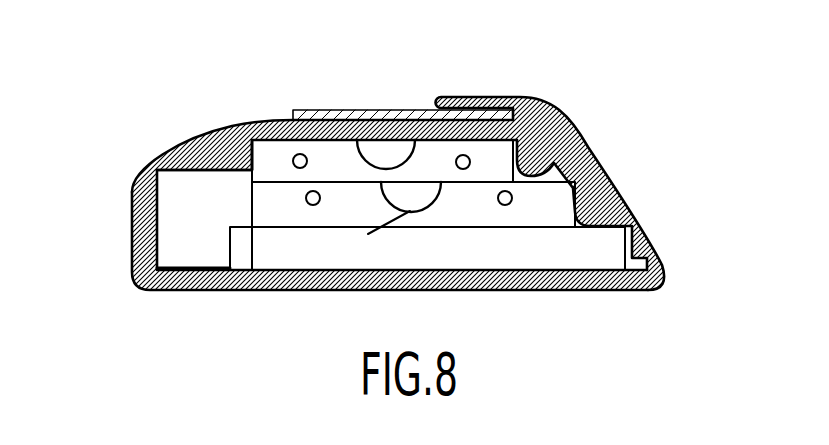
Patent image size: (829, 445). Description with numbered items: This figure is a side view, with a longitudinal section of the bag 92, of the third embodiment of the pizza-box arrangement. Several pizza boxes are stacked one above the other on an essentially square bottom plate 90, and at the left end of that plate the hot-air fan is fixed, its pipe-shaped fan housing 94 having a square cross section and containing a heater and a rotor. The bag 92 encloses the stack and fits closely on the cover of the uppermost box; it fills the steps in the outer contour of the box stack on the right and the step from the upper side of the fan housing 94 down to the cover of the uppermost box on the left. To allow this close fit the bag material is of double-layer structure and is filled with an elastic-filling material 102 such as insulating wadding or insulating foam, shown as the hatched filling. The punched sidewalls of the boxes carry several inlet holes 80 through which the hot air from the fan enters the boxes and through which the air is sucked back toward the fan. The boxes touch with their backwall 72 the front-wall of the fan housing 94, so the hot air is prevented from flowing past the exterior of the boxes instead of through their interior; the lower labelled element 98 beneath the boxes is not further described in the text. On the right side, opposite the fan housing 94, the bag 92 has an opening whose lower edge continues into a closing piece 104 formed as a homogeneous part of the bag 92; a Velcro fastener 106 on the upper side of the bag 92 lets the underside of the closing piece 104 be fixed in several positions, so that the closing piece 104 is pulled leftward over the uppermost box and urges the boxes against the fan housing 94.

The backwall 72 is at (256, 208).
The inlet holes 80 is at (504, 206).
The bottom plate 90 is at (186, 268).
The bag 92 is at (245, 114).
The fan housing 94 is at (211, 214).
The power module 98 is at (558, 261).
The elastic-filling material 102 is at (207, 152).
The closing piece 104 is at (610, 150).
The Velcro fastener 106 is at (400, 96).